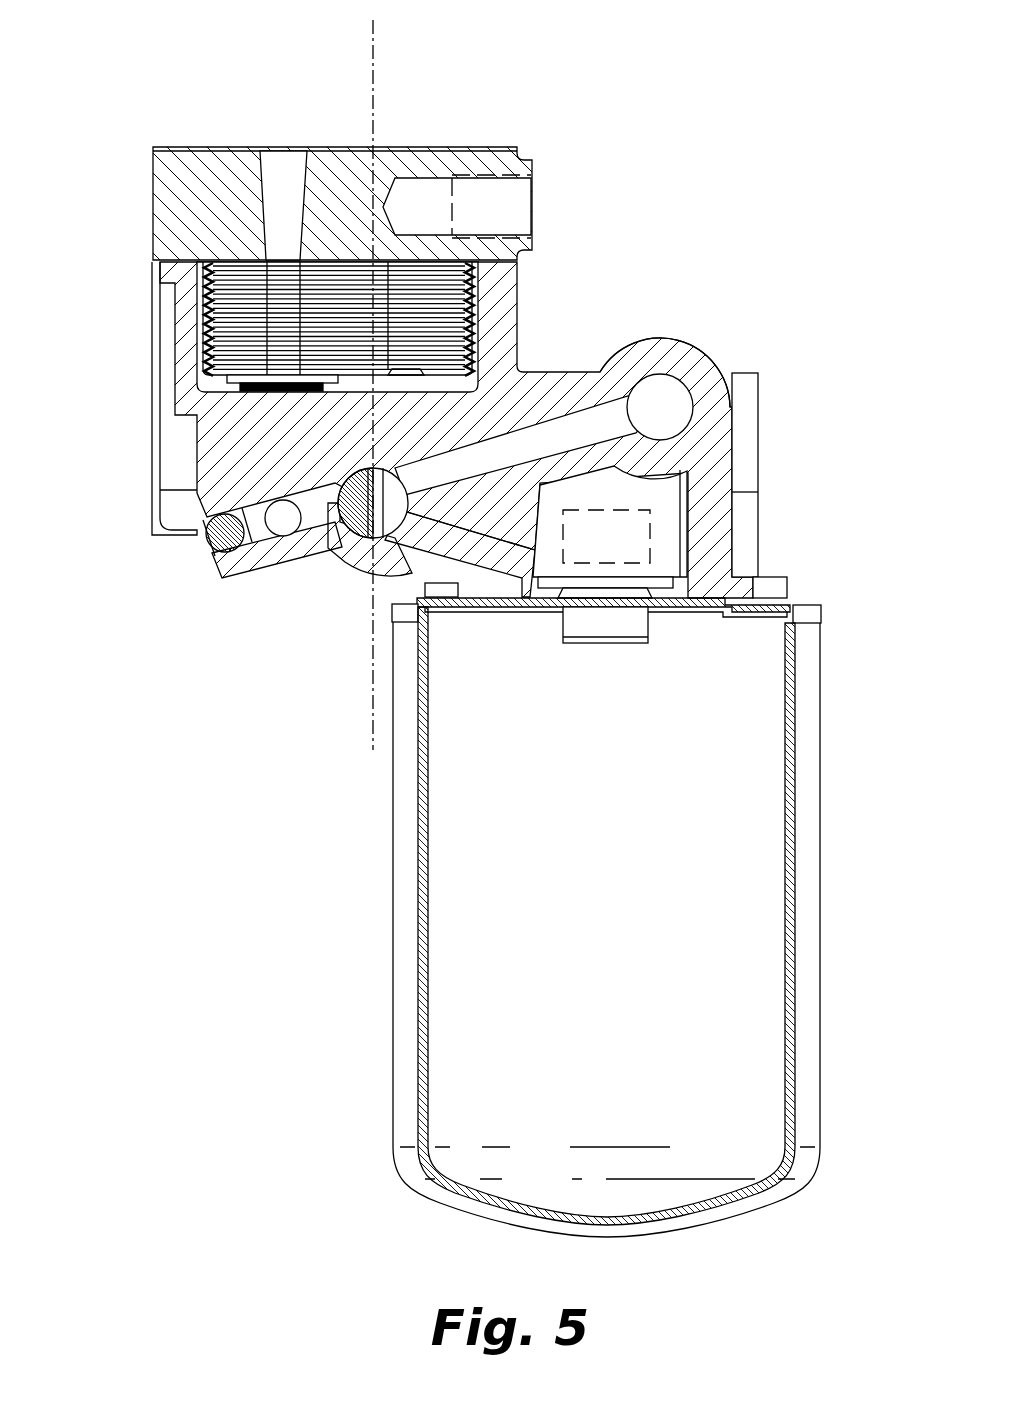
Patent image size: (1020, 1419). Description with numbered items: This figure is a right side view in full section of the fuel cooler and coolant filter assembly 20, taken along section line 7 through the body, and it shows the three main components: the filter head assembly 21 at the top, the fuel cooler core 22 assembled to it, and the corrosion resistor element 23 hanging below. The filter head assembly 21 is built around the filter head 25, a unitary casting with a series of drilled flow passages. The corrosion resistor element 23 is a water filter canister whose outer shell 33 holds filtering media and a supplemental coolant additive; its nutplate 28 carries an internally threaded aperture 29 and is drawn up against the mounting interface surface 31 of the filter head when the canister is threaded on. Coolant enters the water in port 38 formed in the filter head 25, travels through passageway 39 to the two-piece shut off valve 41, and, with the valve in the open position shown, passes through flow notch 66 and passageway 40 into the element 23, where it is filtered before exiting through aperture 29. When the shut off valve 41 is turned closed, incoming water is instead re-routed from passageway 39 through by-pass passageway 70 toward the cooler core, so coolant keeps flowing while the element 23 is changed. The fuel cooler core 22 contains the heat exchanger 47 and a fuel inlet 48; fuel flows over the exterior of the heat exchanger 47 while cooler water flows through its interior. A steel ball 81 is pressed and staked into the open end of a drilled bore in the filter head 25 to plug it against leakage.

The section line 7- 7 is at (373, 20).
The fuel cooler and coolant filter assembly 20 is at (770, 138).
The filter head assembly 21 is at (648, 350).
The fuel cooler core 22 is at (437, 157).
The corrosion resistor element 23 is at (735, 767).
The filter head 25 is at (232, 468).
The nutplate 28 is at (790, 598).
The internally threaded aperture 29 is at (628, 623).
The mounting interface surface 31 is at (500, 604).
The outer shell 33 is at (790, 962).
The water in port 38 is at (675, 410).
The passageway 39 is at (555, 435).
The passageway 40 is at (450, 550).
The shut off valve 41 is at (335, 522).
The heat exchanger 47 is at (225, 320).
The fuel inlet 48 is at (532, 200).
The flow notch 66 is at (352, 550).
The by-pass passageway 70 is at (296, 498).
The steel ball 81 is at (222, 528).